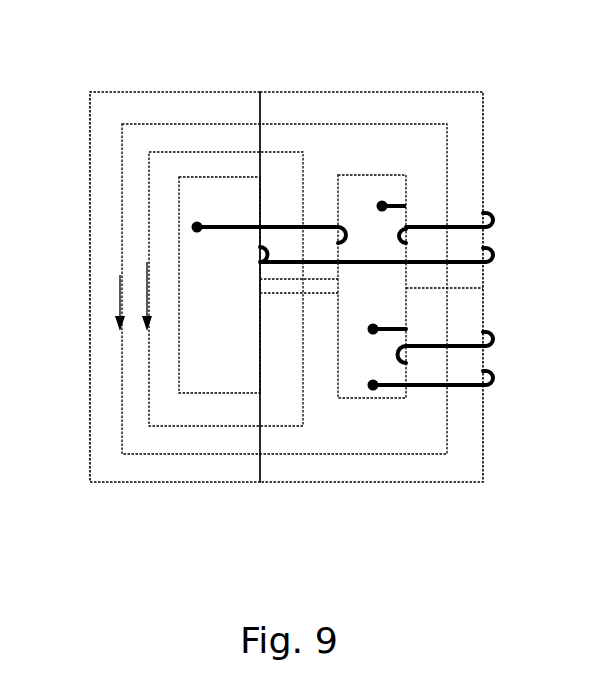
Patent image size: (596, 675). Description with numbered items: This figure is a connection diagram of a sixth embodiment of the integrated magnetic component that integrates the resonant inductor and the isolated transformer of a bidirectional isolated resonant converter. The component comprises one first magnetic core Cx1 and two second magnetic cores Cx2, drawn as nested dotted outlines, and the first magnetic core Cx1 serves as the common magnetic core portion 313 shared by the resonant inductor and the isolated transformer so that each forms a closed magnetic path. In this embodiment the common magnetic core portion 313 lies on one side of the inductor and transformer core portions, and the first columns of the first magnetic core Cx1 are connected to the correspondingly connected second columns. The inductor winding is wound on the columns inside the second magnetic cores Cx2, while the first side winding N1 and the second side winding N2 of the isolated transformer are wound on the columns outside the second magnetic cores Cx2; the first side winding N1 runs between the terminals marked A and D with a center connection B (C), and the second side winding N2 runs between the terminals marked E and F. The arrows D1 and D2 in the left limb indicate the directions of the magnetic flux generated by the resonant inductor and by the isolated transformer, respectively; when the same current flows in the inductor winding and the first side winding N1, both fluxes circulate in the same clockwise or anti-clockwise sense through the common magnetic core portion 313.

The first magnetic core Cx1 is at (175, 334).
The common magnetic core portion 313 is at (112, 508).
The second magnetic core Cx2 is at (402, 76).
The first side winding N1 is at (508, 202).
The second side winding N2 is at (508, 323).
The terminal A is at (196, 245).
The terminal B is at (372, 286).
The terminal C is at (372, 286).
The terminal D is at (380, 197).
The terminal E is at (363, 330).
The terminal F is at (363, 384).
The arrow D1 is at (147, 262).
The arrow D2 is at (120, 275).